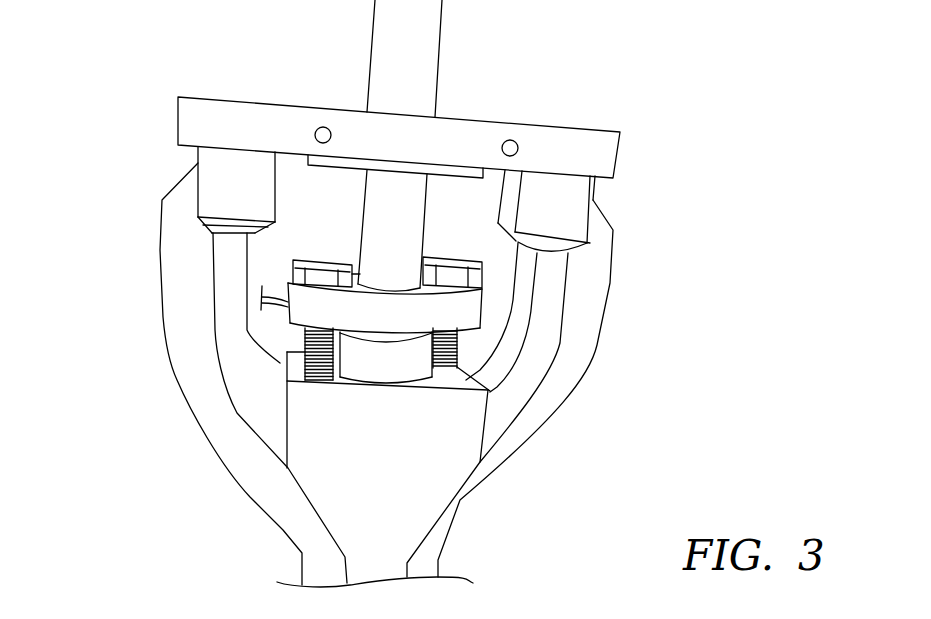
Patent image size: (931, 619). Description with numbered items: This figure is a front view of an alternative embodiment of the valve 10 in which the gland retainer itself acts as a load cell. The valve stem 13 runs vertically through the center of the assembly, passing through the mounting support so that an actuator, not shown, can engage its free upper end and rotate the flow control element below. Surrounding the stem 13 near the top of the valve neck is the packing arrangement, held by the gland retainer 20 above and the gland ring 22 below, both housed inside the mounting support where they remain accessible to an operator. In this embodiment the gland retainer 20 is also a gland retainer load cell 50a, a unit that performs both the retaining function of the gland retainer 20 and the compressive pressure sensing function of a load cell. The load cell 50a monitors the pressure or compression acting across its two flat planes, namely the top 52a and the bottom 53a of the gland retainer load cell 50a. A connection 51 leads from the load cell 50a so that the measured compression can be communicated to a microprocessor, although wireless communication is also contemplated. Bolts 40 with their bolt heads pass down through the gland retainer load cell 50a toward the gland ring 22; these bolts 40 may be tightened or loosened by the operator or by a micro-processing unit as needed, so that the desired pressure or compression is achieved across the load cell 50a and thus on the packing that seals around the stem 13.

The valve 10 is at (137, 345).
The valve stem 13 is at (437, 52).
The gland retainer 20 is at (482, 300).
The gland ring 22 is at (425, 385).
The bolt 40 is at (310, 257).
The connection 51 is at (280, 302).
The gland retainer load cell 50a is at (480, 317).
The top of gland retainer load cell 52a is at (447, 255).
The bottom of gland retainer load cell 53a is at (468, 330).